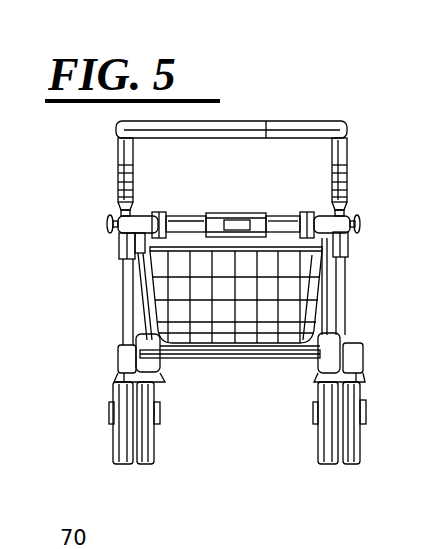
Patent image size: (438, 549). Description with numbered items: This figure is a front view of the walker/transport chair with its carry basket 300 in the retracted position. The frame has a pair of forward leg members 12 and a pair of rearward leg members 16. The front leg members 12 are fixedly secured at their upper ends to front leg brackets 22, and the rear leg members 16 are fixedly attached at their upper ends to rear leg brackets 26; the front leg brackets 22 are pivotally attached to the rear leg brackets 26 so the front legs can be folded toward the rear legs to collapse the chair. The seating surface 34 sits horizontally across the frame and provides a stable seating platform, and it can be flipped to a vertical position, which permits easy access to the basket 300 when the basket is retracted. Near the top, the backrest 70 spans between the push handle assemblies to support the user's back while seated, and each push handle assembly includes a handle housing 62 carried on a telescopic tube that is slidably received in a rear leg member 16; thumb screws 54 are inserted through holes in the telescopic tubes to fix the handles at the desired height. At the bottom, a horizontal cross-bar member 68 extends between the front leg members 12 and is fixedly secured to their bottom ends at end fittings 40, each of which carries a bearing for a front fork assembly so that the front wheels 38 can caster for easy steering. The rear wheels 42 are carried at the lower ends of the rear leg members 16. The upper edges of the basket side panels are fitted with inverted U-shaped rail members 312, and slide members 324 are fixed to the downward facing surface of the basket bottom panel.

The backrest 70 is at (231, 145).
The handle housing 62 is at (95, 177).
The seating surface 34 is at (234, 205).
The thumb screw 54 is at (83, 224).
The front leg bracket 22 is at (366, 238).
The rear leg bracket 26 is at (95, 253).
The rail member 312 is at (101, 286).
The rearward leg member 16 is at (97, 302).
The forward leg member 12 is at (351, 289).
The basket 300 is at (280, 295).
The cross-bar member 68 is at (230, 374).
The slide member 324 is at (240, 373).
The front wheel 38 is at (234, 423).
The end fitting 40 is at (360, 357).
The rear wheel 42 is at (389, 426).